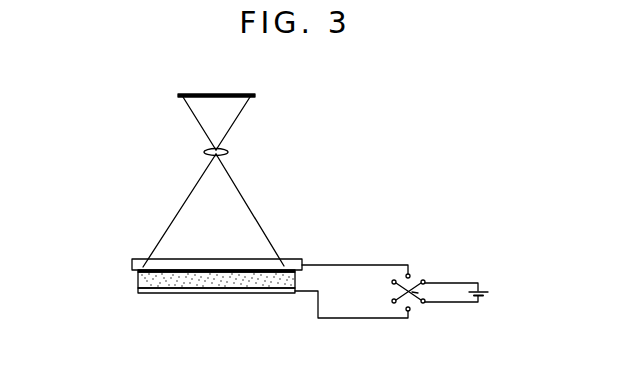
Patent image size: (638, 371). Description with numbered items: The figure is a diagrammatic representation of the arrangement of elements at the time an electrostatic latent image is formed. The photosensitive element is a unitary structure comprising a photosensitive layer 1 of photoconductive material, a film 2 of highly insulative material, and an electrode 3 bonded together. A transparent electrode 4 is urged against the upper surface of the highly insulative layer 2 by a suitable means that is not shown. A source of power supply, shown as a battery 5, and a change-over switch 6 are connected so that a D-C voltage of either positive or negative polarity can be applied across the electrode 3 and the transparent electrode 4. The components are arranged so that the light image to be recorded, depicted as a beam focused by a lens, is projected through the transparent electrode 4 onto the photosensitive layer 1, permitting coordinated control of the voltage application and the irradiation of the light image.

The photosensitive layer 1 is at (296, 280).
The film of highly insulative material 2 is at (137, 272).
The electrode 3 is at (191, 294).
The transparent electrode 4 is at (134, 265).
The battery 5 is at (481, 310).
The change-over switch 6 is at (413, 282).